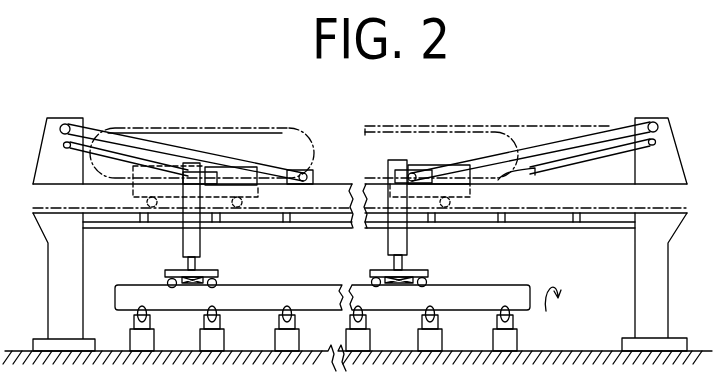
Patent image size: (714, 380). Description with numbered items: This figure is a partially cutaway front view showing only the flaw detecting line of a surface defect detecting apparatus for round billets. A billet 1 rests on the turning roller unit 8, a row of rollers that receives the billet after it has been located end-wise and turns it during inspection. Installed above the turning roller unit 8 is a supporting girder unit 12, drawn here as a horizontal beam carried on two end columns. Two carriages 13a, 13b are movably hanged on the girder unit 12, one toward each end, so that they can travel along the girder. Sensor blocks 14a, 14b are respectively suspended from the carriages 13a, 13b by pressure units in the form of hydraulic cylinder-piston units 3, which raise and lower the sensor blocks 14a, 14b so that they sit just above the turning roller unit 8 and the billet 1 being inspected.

The billet 1 is at (519, 291).
The hydraulic cylinder-piston unit 3 is at (200, 242).
The turning roller unit 8 is at (514, 318).
The supporting girder unit 12 is at (597, 204).
The carriage 13a is at (231, 167).
The carriage 13b is at (422, 167).
The sensor block 14a is at (176, 273).
The sensor block 14b is at (423, 272).